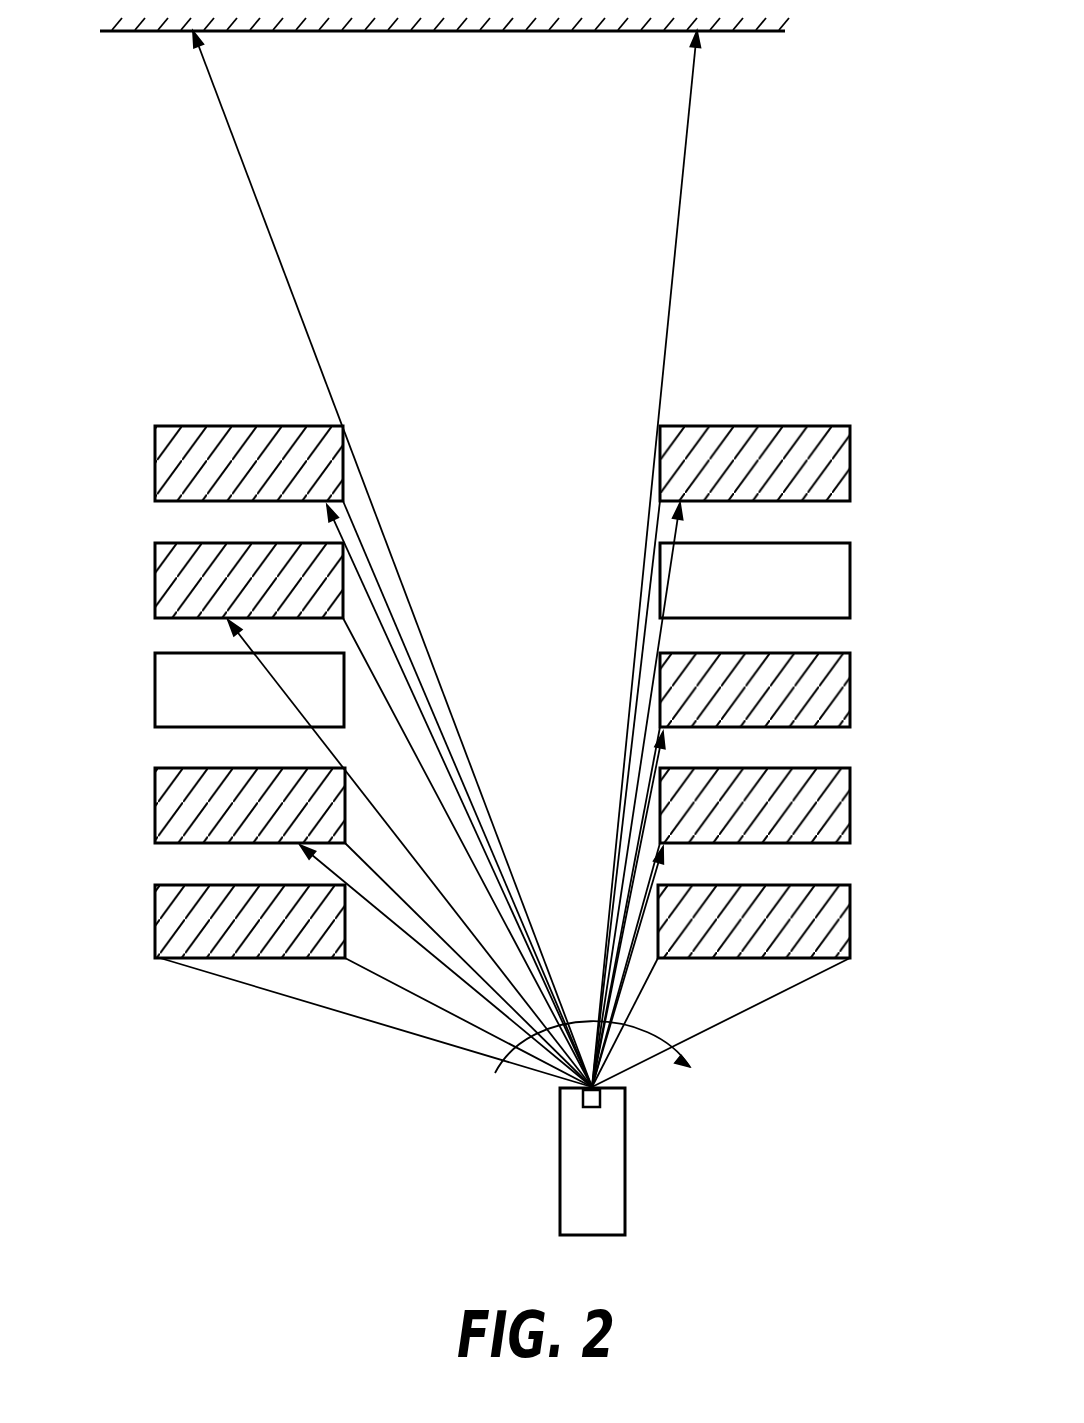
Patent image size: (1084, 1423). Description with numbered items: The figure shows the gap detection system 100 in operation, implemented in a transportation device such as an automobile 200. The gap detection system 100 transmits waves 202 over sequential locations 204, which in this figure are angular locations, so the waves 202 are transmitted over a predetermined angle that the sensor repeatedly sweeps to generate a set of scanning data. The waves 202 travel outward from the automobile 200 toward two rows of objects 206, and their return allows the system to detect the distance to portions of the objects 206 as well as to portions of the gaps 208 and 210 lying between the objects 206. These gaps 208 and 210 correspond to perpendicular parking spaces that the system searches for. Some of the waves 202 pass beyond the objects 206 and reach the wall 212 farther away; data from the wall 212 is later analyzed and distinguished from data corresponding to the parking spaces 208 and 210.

The gap detection system 100 is at (588, 1110).
The automobile 200 is at (625, 1150).
The waves 202 is at (358, 1020).
The sequential locations 204 is at (588, 1020).
The objects 206 is at (155, 921).
The gap 208 is at (155, 686).
The gap 210 is at (852, 570).
The wall 212 is at (762, 33).